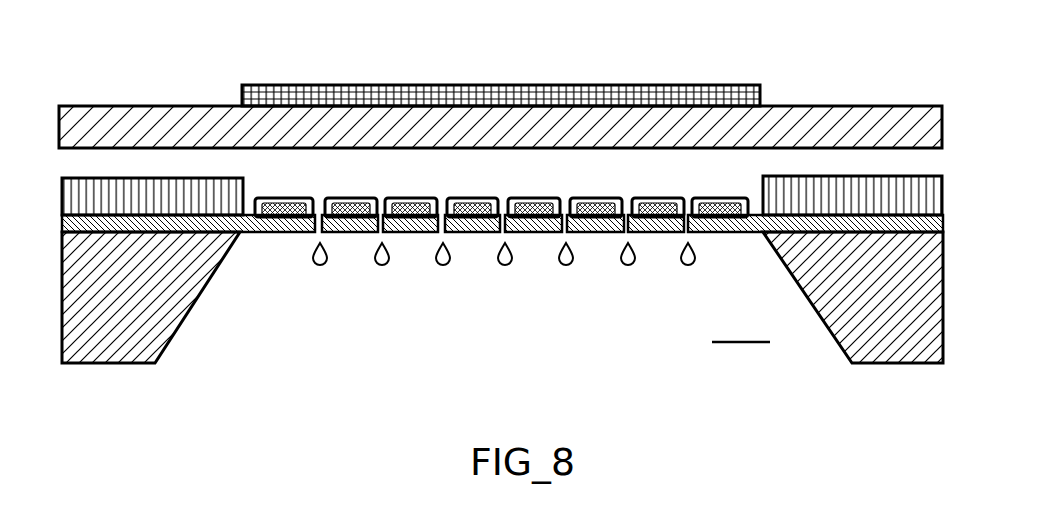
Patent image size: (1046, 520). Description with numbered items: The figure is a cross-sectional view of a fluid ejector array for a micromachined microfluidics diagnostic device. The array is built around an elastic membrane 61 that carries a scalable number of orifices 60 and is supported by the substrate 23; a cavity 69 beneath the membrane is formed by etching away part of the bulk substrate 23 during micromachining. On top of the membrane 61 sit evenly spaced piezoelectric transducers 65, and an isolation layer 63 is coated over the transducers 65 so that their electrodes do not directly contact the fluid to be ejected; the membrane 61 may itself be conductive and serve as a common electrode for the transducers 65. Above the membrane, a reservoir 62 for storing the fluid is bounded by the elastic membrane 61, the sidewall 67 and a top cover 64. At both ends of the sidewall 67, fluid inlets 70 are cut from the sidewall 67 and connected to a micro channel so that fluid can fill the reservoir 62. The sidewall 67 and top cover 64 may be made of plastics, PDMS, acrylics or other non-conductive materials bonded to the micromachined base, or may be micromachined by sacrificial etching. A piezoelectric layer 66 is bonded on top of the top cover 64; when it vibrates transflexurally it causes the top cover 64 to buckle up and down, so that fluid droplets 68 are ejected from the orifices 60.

The substrate 23 is at (173, 273).
The orifices 60 is at (320, 193).
The elastic membrane 61 is at (253, 232).
The reservoir 62 is at (737, 173).
The isolation layer 63 is at (715, 197).
The top cover 64 is at (363, 120).
The piezoelectric transducers 65 is at (283, 197).
The piezoelectric layer 66 is at (648, 97).
The sidewall 67 is at (168, 197).
The fluid droplets 68 is at (323, 283).
The cavity 69 is at (741, 326).
The fluid inlets 70 is at (120, 160).